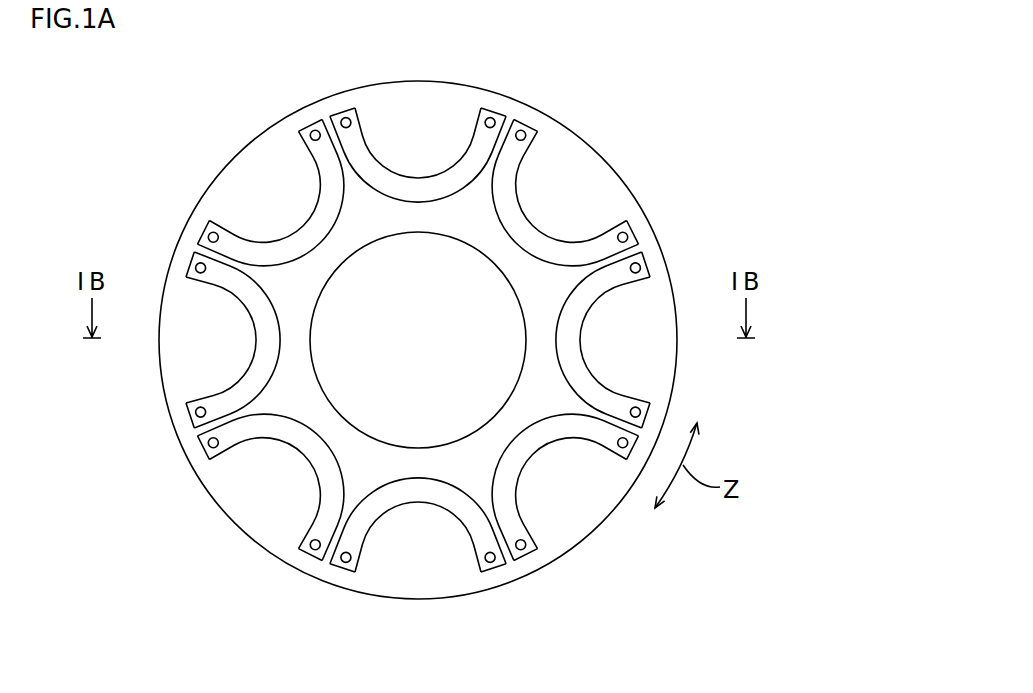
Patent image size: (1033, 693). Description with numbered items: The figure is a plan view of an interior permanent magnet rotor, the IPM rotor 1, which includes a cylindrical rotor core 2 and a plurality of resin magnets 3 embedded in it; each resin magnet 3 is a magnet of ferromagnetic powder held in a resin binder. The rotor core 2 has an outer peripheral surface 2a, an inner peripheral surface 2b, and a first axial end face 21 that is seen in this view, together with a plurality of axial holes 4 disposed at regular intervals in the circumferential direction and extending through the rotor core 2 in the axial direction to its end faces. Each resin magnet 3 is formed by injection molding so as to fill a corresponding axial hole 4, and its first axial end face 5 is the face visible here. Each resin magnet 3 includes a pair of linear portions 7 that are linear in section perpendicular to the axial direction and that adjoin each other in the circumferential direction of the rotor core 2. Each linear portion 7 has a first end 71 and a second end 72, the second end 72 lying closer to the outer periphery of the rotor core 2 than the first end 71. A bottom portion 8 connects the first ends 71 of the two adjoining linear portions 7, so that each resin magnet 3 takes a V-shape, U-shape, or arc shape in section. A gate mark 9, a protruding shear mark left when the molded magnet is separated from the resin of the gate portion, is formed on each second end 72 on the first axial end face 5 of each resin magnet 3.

The IPM rotor 1 is at (584, 114).
The rotor core 2 is at (605, 156).
The first axial end face 21 is at (615, 195).
The outer peripheral surface 2a is at (660, 238).
The inner peripheral surface 2b is at (503, 274).
The resin magnet 3 is at (372, 148).
The axial hole 4 is at (463, 146).
The first axial end face 5 is at (404, 186).
The linear portion 7 is at (373, 172).
The first end 71 is at (397, 200).
The second end 72 is at (338, 131).
The bottom portion 8 is at (418, 194).
The gate mark 9 is at (345, 118).